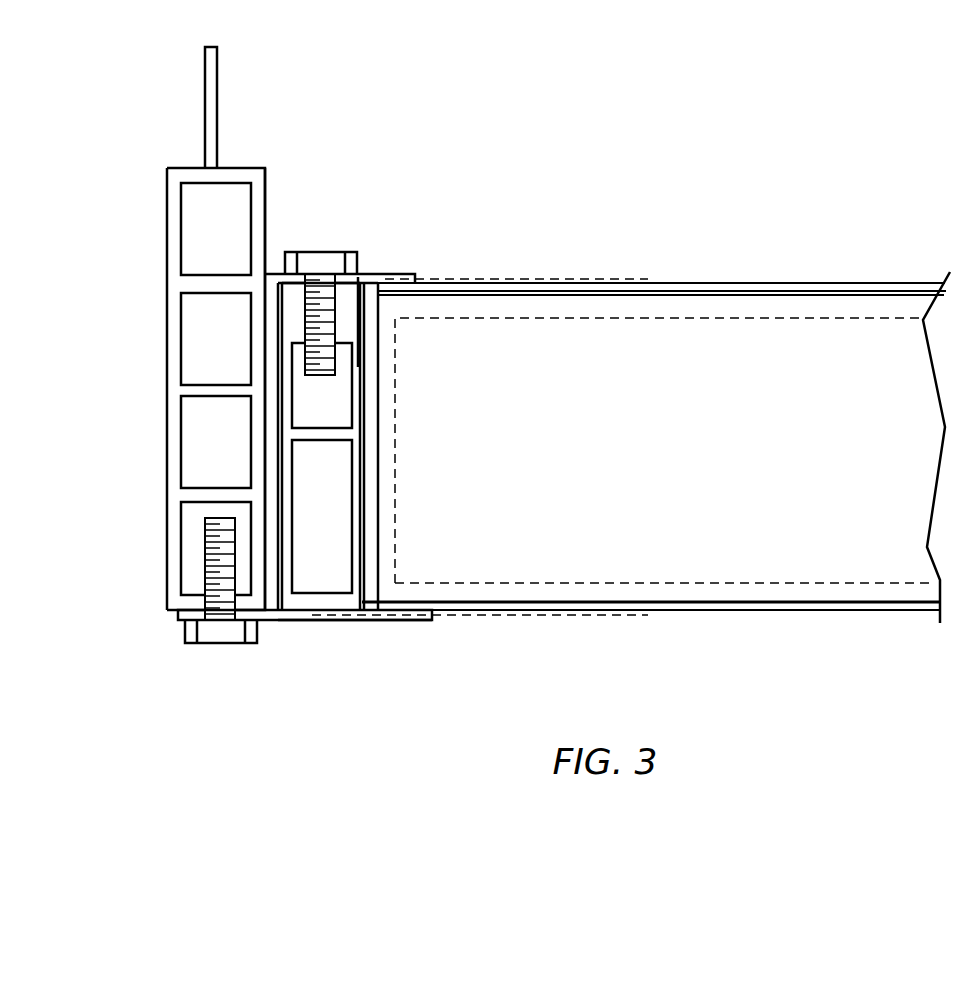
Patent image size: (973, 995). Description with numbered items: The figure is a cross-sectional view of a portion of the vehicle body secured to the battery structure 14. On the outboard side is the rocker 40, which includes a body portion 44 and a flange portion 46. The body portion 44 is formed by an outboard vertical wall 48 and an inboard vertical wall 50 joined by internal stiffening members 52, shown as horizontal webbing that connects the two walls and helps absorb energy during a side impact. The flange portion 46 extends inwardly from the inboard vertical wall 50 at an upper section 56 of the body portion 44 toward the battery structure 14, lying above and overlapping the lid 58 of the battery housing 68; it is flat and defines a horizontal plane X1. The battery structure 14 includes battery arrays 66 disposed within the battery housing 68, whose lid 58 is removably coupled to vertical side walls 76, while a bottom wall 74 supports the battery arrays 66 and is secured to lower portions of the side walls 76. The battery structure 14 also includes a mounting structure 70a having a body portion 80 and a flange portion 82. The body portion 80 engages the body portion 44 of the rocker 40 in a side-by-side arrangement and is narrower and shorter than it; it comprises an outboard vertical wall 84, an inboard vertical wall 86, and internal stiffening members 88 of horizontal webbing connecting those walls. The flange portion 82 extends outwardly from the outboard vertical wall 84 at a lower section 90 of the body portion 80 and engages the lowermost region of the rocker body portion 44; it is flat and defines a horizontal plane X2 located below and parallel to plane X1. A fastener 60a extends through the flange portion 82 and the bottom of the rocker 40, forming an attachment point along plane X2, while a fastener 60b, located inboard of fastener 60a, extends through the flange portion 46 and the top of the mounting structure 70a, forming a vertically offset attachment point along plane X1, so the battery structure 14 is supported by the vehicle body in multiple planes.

The battery structure 14 is at (747, 205).
The rocker 40 is at (132, 185).
The body portion 44 is at (167, 220).
The flange portion 46 is at (377, 275).
The outboard vertical wall 48 is at (167, 282).
The inboard vertical wall 50 is at (268, 403).
The internal stiffening members 52 is at (213, 285).
The upper section 56 is at (236, 270).
The lid 58 is at (885, 297).
The fastener 60a is at (221, 642).
The fastener 60b is at (350, 250).
The battery arrays 66 is at (764, 316).
The battery housing 68 is at (727, 612).
The mounting structure 70a is at (398, 652).
The bottom wall 74 is at (875, 602).
The side walls 76 is at (378, 355).
The body portion 80 is at (307, 620).
The flange portion 82 is at (193, 612).
The outboard vertical wall 84 is at (280, 375).
The inboard vertical wall 86 is at (362, 277).
The internal stiffening members 88 is at (320, 440).
The lower section 90 is at (275, 612).
The plane X1 is at (490, 277).
The plane X2 is at (525, 616).